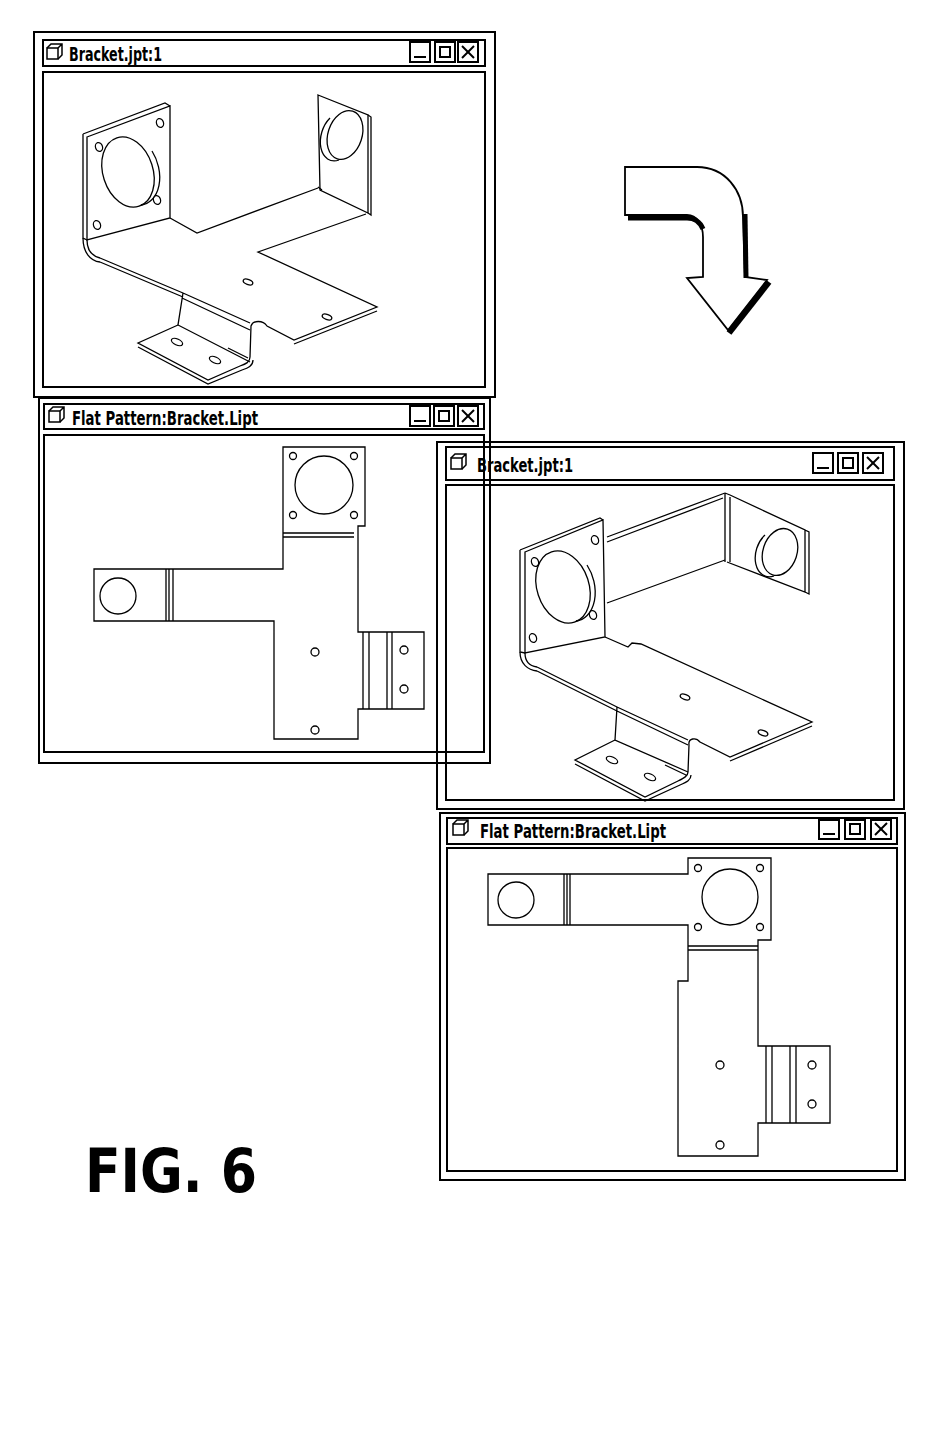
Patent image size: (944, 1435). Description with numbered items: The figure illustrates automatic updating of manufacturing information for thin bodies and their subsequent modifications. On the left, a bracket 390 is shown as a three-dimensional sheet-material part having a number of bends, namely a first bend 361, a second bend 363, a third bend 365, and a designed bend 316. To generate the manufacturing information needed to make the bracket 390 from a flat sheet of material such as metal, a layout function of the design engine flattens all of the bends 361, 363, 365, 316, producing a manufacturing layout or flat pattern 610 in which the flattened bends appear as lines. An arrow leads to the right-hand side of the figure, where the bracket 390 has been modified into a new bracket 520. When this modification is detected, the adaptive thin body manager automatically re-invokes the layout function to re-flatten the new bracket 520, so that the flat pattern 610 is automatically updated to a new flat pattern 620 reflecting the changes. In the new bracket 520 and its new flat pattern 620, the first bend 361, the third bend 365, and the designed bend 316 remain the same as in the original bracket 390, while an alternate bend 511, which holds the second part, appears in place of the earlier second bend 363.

The designed bend 316 is at (227, 348).
The first bend 361 is at (110, 265).
The second bend 363 is at (350, 193).
The third bend 365 is at (220, 313).
The bracket 390 is at (243, 245).
The alternate bend 511 is at (730, 500).
The new bracket 520 is at (745, 690).
The flat pattern 610 is at (292, 605).
The new flat pattern 620 is at (690, 1051).